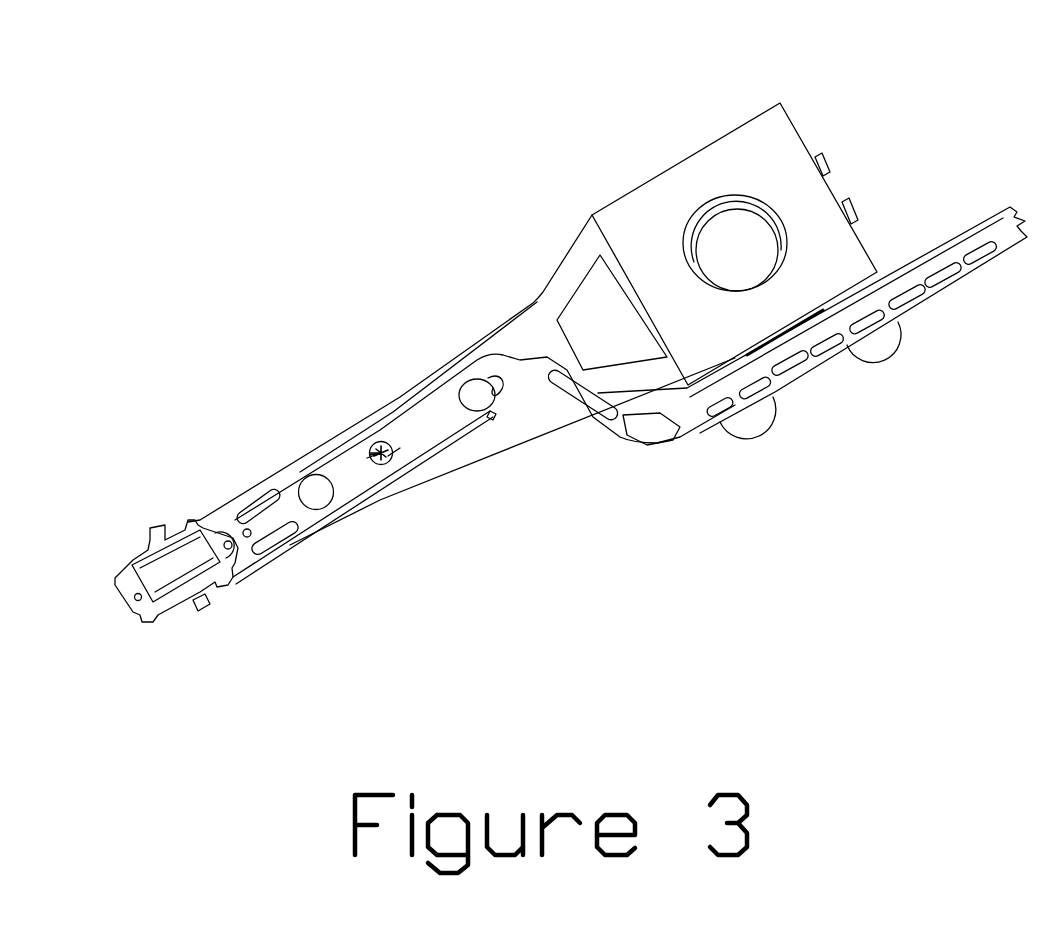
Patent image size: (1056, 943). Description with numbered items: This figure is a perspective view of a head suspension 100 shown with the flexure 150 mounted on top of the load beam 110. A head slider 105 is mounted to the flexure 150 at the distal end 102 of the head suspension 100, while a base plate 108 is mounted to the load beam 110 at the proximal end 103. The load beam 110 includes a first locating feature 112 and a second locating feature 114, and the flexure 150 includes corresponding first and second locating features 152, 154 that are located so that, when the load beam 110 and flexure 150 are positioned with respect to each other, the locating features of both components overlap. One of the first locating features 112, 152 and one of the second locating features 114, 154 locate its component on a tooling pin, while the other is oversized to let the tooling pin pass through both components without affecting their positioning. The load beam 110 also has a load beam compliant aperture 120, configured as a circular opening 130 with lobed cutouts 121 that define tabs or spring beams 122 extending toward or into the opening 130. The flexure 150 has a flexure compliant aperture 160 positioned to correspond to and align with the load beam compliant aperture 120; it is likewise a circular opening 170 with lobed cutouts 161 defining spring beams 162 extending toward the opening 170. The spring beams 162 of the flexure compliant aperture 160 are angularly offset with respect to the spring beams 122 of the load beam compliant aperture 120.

The head suspension 100 is at (512, 193).
The distal end 102 is at (160, 623).
The proximal end 103 is at (875, 240).
The head slider 105 is at (155, 562).
The base plate 108 is at (738, 127).
The load beam 110 is at (473, 340).
The first locating feature 112 is at (493, 410).
The second locating feature 114 is at (300, 510).
The load beam compliant aperture 120 is at (370, 450).
The lobed cutouts 121 is at (371, 455).
The spring beams 122 is at (367, 458).
The circular opening 130 is at (393, 447).
The flexure 150 is at (363, 498).
The first locating feature 152 is at (497, 393).
The second locating feature 154 is at (323, 505).
The flexure compliant aperture 160 is at (382, 468).
The lobed cutouts 161 is at (395, 468).
The spring beams 162 is at (400, 448).
The circular opening 170 is at (397, 463).